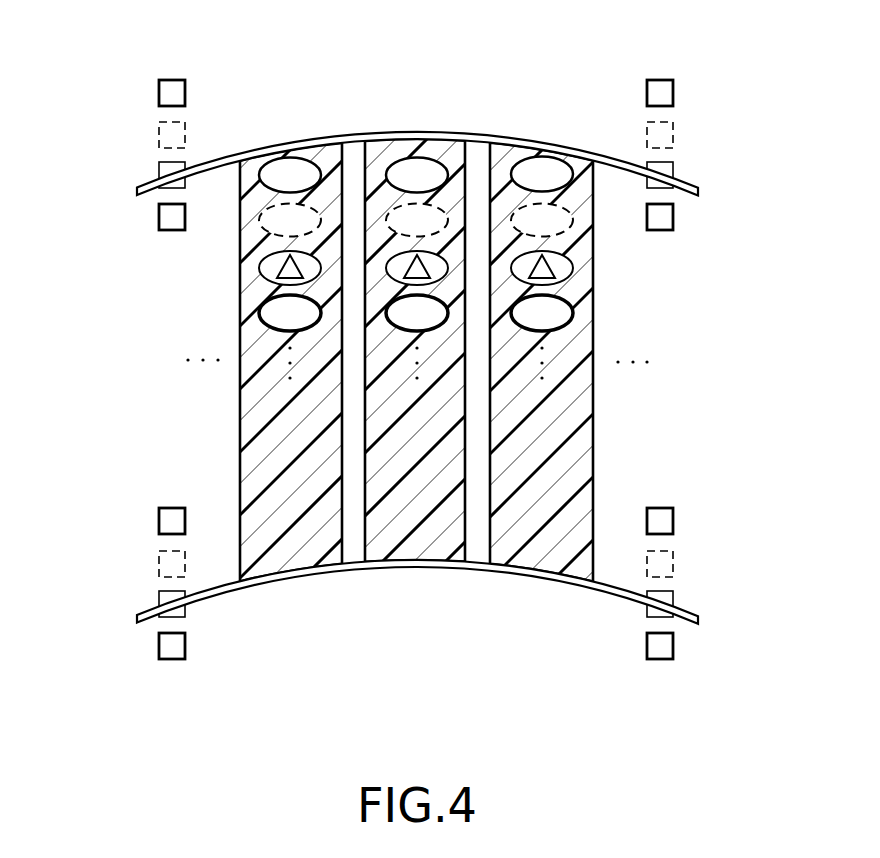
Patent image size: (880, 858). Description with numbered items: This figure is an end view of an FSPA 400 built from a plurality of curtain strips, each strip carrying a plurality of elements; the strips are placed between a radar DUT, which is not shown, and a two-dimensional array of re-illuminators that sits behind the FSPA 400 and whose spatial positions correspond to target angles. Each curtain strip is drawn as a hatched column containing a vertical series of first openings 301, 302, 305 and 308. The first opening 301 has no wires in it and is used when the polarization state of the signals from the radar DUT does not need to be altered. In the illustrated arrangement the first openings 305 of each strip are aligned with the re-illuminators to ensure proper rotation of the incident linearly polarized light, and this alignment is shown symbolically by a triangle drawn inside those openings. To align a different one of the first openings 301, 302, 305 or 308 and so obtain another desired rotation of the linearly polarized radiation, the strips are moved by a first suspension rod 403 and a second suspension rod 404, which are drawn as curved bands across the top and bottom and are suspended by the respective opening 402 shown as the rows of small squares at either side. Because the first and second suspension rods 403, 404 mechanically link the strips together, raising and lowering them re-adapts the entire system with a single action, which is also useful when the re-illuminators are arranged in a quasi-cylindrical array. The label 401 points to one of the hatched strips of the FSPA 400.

The FSPA 400 is at (430, 42).
The first opening 301 is at (288, 157).
The first opening 302 is at (260, 229).
The first opening 305 is at (260, 268).
The first opening 308 is at (260, 316).
The sensor column 401 is at (562, 266).
The opening 402 is at (150, 112).
The first suspension rod 403 is at (136, 188).
The second suspension rod 404 is at (137, 620).